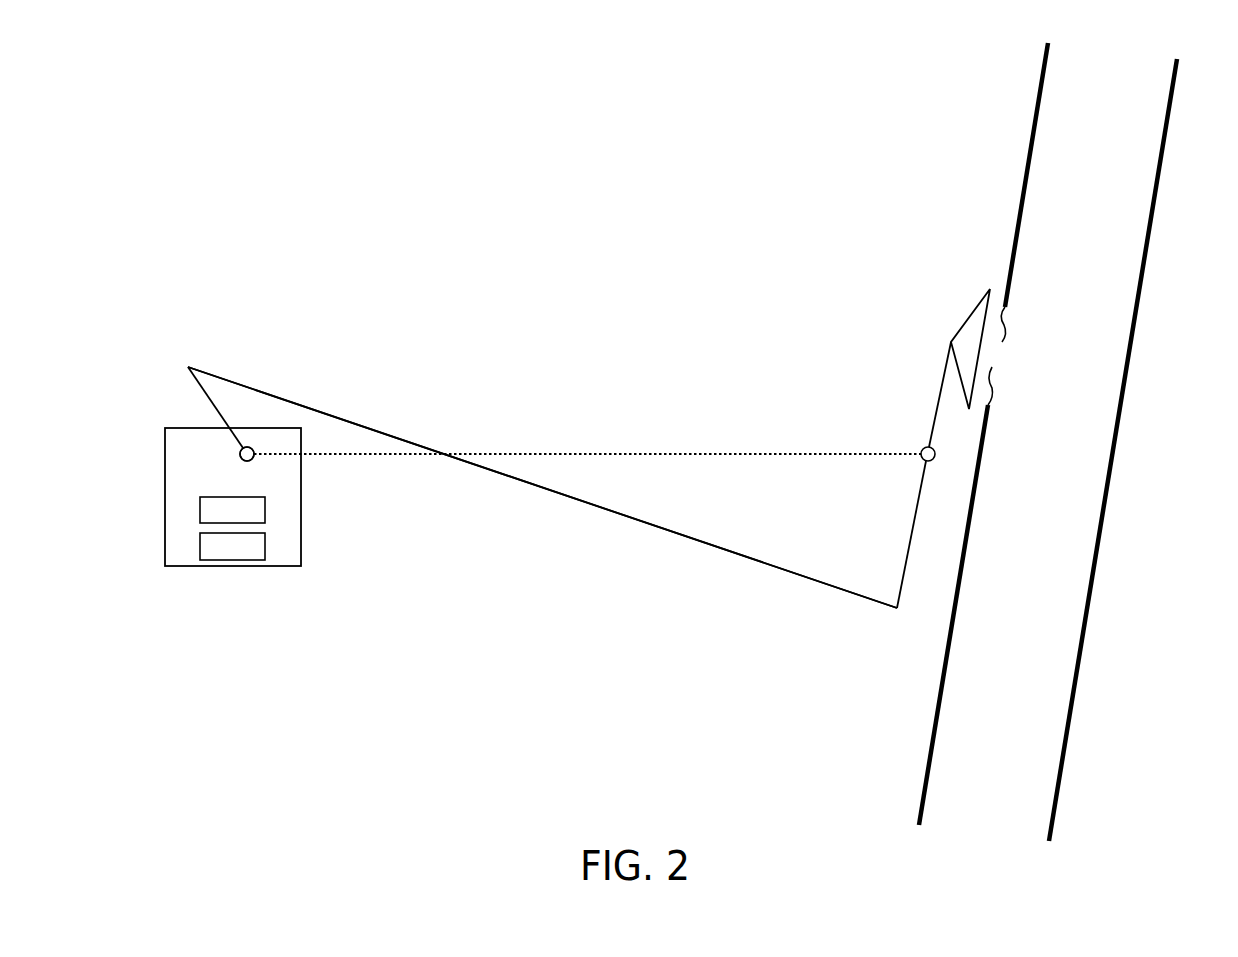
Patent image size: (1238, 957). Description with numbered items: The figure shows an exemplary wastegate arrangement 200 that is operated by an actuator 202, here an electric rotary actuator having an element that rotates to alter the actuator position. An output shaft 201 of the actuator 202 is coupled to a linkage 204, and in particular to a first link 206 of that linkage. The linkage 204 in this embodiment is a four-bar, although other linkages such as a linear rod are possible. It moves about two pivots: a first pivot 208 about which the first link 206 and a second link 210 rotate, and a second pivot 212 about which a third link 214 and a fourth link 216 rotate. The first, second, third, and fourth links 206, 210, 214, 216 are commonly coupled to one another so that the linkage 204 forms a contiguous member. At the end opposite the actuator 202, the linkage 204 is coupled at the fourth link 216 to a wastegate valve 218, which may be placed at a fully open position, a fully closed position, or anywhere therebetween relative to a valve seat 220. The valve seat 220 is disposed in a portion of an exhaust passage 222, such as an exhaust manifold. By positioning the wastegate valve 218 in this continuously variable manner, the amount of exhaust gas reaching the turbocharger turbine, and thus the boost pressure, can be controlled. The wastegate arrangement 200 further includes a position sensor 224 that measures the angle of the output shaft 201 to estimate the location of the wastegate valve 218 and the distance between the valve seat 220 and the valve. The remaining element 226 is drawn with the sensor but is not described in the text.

The wastegate arrangement 200 is at (569, 253).
The output shaft 201 is at (240, 456).
The actuator 202 is at (165, 428).
The linkage 204 is at (523, 533).
The first link 206 is at (188, 367).
The first pivot 208 is at (249, 461).
The second link 210 is at (340, 419).
The second pivot 212 is at (936, 456).
The third link 214 is at (906, 558).
The fourth link 216 is at (934, 426).
The wastegate valve 218 is at (967, 319).
The valve seat 220 is at (983, 434).
The exhaust passage 222 is at (1042, 673).
The position sensor 224 is at (232, 510).
The memory 226 is at (232, 546).